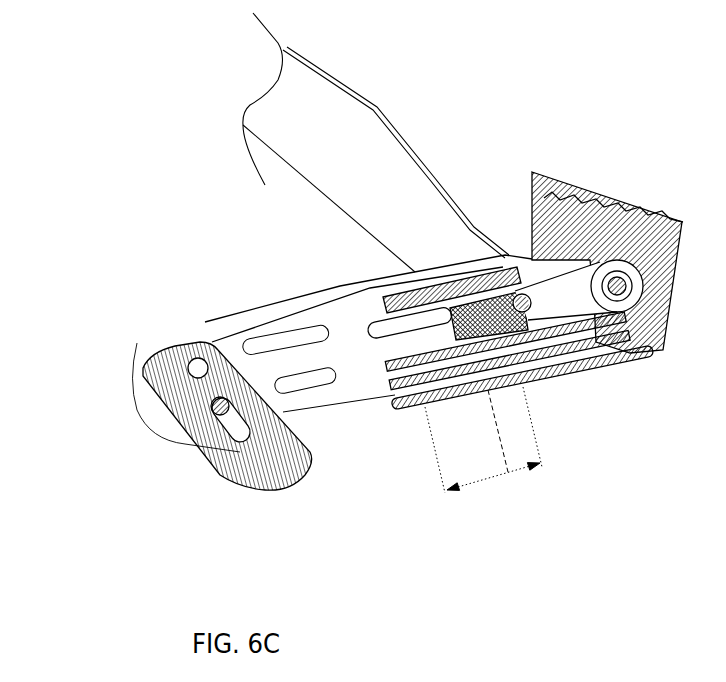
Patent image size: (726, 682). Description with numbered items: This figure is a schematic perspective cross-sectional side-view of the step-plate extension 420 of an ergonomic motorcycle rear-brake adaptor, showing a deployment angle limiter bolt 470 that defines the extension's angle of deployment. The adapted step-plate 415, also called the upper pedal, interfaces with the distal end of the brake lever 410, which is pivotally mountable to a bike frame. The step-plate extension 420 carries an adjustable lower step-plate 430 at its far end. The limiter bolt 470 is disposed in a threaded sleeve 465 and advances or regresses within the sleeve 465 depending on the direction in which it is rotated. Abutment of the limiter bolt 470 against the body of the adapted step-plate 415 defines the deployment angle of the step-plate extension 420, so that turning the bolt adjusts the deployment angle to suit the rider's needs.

The brake lever 410 is at (387, 122).
The adapted step-plate 415 is at (670, 207).
The step-plate extension 420 is at (320, 296).
The lower step-plate 430 is at (292, 470).
The threaded sleeve 465 is at (410, 397).
The deployment angle limiter bolt 470 is at (597, 357).